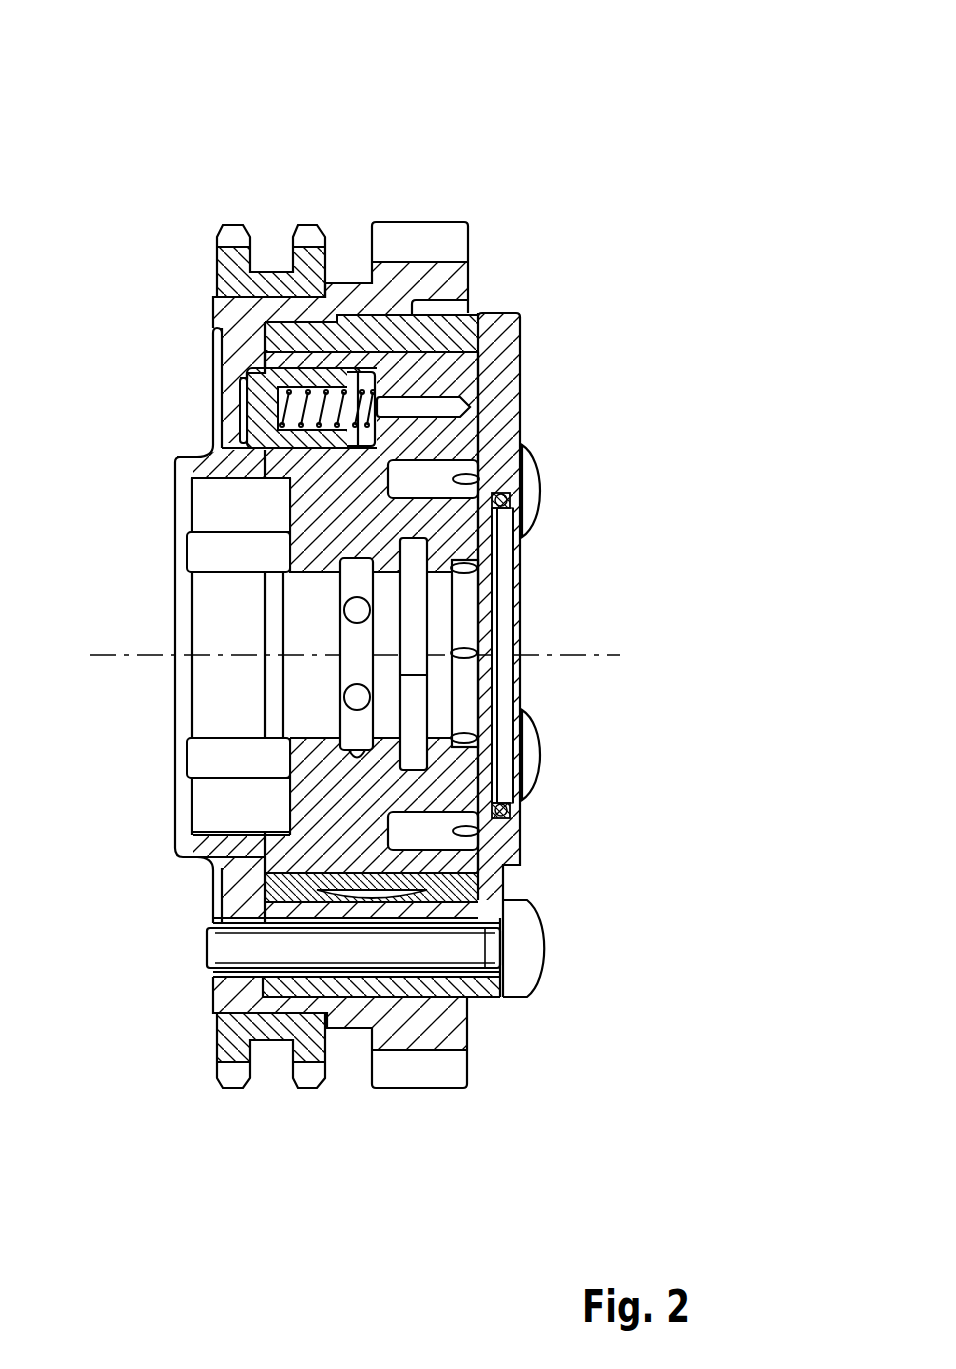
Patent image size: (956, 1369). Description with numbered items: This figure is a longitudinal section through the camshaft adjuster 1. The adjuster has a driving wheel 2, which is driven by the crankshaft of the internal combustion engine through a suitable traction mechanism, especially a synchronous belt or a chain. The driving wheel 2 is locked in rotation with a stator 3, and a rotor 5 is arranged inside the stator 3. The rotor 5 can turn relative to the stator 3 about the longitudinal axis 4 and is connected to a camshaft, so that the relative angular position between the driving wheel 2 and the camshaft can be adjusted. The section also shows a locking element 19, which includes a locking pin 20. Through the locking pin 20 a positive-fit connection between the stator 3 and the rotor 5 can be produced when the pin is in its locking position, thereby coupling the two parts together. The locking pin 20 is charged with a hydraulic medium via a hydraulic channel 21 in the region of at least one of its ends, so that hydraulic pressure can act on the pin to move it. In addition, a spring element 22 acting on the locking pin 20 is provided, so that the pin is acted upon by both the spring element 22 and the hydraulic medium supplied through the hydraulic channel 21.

The camshaft adjuster 1 is at (563, 143).
The driving wheel 2 is at (268, 228).
The stator 3 is at (243, 318).
The longitudinal axis 4 is at (590, 653).
The rotor 5 is at (400, 367).
The locking element 19 is at (310, 357).
The locking pin 20 is at (262, 388).
The hydraulic channel 21 is at (445, 407).
The spring element 22 is at (345, 400).